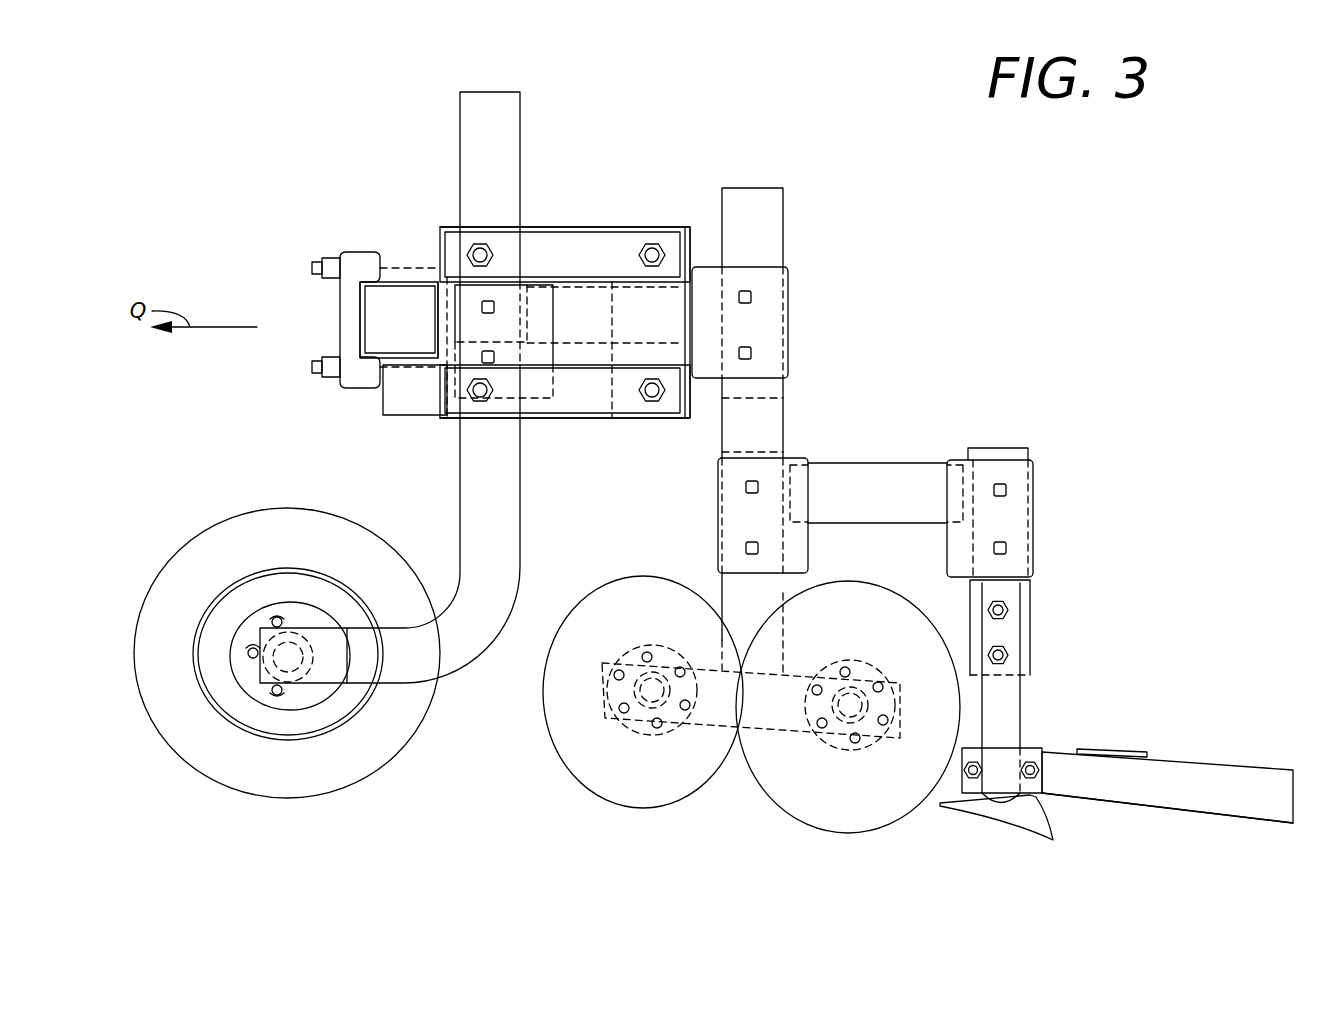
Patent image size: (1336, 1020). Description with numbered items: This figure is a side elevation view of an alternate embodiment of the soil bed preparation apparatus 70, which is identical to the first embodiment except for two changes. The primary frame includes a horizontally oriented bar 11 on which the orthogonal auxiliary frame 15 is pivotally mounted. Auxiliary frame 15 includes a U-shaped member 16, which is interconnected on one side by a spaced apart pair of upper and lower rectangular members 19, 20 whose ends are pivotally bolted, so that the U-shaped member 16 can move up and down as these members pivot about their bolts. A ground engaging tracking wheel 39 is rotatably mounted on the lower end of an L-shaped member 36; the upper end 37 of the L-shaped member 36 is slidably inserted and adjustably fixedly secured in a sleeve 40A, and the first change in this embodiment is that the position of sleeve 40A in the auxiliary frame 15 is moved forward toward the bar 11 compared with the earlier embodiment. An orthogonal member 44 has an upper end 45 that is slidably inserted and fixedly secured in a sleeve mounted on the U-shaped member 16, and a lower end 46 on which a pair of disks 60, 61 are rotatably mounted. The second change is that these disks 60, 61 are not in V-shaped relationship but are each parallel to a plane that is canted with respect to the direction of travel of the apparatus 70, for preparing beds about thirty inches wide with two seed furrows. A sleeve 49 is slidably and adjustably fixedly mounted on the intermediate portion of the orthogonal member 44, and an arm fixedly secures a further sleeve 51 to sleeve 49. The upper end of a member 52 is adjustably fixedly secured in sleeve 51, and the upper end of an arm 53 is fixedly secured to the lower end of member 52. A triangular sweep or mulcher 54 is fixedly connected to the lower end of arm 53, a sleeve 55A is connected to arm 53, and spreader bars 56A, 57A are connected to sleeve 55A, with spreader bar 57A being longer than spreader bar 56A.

The soil bed preparation apparatus 70 is at (358, 180).
The upper end of L-shaped member 37 is at (465, 110).
The auxiliary frame 15 is at (590, 211).
The upper rectangular member 19 is at (538, 228).
The lower rectangular member 20 is at (568, 403).
The horizontally oriented bar 11 is at (433, 330).
The sleeve 40A is at (480, 339).
The U-shaped member 16 is at (631, 325).
The upper end of orthogonal member 45 is at (766, 193).
The orthogonal member 44 is at (800, 403).
The sleeve 49 is at (805, 563).
The sleeve 51 is at (1018, 507).
The member 52 is at (1030, 657).
The arm 53 is at (1022, 720).
The sweep or mulcher 54 is at (1010, 830).
The sleeve 55A is at (1037, 796).
The spreader bar 56A is at (1120, 750).
The spreader bar 57A is at (1265, 808).
The disk 60 is at (653, 790).
The disk 61 is at (818, 815).
The lower end of orthogonal member 46 is at (733, 593).
The tracking wheel 39 is at (238, 548).
The L-shaped member 36 is at (540, 568).